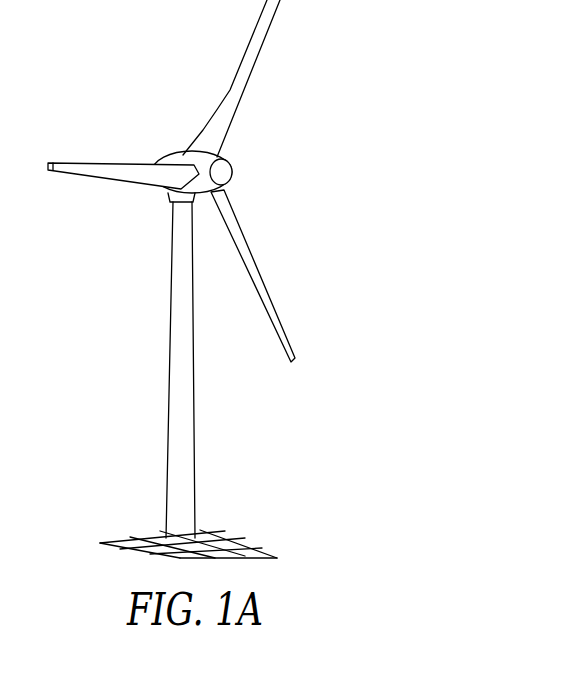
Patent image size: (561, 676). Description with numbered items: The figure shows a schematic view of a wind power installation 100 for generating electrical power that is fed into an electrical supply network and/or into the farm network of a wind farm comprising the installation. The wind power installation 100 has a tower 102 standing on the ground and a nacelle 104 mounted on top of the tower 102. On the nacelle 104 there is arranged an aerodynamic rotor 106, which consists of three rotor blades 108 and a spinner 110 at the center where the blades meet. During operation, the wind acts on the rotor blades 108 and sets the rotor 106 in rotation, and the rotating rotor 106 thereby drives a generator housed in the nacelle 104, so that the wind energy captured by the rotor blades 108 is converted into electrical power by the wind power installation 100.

The wind power installation 100 is at (150, 232).
The tower 102 is at (188, 418).
The nacelle 104 is at (177, 156).
The aerodynamic rotor 106 is at (272, 129).
The rotor blades 108 is at (237, 78).
The spinner 110 is at (223, 172).